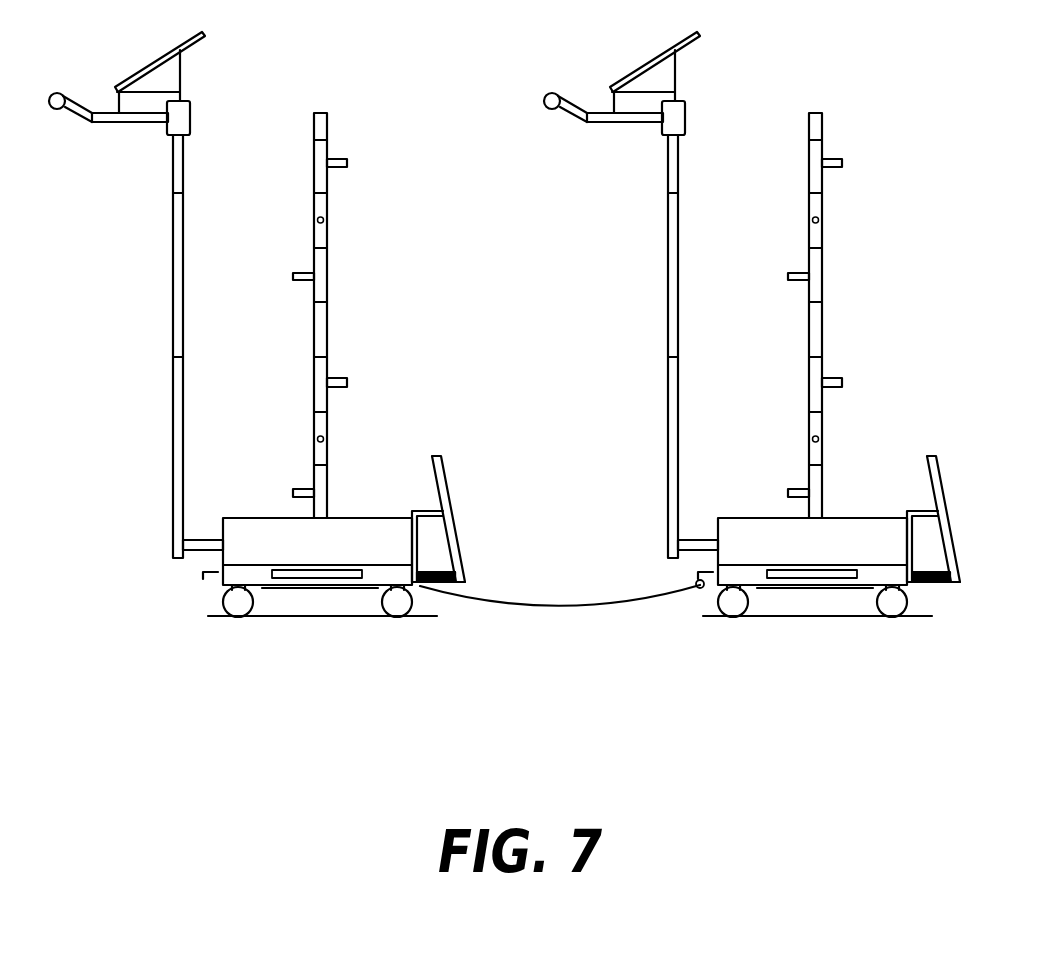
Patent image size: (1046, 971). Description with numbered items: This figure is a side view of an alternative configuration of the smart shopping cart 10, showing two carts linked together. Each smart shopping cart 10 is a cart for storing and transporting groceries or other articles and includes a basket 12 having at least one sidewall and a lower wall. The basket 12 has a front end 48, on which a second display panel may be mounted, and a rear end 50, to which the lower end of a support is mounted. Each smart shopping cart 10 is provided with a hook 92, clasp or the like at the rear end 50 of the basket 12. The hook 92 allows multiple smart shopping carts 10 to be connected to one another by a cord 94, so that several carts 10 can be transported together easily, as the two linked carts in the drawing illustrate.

The smart shopping cart 10 is at (122, 254).
The basket 12 is at (370, 540).
The front end 48 is at (398, 577).
The rear end 50 is at (229, 486).
The hook 92 is at (203, 580).
The cord 94 is at (555, 609).